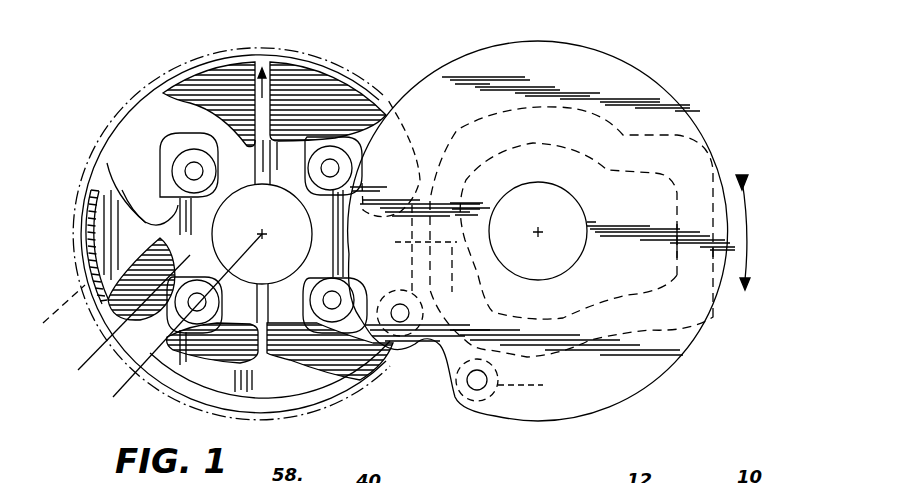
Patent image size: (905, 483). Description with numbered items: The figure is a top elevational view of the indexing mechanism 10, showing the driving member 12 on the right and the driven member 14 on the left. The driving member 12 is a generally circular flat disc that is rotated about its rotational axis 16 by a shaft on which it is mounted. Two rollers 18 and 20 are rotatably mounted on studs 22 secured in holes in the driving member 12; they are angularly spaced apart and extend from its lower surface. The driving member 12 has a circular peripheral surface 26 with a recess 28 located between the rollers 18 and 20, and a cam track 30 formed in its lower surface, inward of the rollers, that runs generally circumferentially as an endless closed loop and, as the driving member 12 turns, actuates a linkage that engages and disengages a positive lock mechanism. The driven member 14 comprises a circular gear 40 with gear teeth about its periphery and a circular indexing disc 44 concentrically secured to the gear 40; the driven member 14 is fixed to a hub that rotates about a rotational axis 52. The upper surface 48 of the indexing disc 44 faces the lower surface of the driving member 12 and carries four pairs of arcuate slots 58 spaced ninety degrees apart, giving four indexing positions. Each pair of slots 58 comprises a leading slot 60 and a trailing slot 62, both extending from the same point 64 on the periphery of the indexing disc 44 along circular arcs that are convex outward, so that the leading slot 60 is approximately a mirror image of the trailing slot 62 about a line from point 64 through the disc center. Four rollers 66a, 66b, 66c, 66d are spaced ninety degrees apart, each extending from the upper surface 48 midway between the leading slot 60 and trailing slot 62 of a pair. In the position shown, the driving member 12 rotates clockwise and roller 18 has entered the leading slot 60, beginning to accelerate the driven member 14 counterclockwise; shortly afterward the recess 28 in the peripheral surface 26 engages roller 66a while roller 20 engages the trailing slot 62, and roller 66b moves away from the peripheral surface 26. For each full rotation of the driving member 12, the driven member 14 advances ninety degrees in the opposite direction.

The indexing mechanism 10 is at (777, 48).
The driving member 12 is at (620, 74).
The driven member 14 is at (130, 92).
The rotational axis 16 is at (541, 229).
The roller 18 is at (444, 312).
The roller 20 is at (534, 387).
The studs 22 is at (484, 391).
The circular peripheral surface 26 is at (705, 333).
The recess 28 is at (436, 352).
The cam track 30 is at (584, 110).
The circular gear 40 is at (57, 320).
The circular indexing disc 44 is at (84, 218).
The upper surface 48 is at (256, 185).
The rotational axis 52 is at (266, 230).
The pairs of arcuate slots 58 is at (130, 136).
The leading slot 60 is at (213, 373).
The trailing slot 62 is at (310, 372).
The point 64 is at (172, 329).
The roller 66a is at (362, 284).
The roller 66b is at (347, 150).
The roller 66c is at (226, 293).
The roller 66d is at (182, 172).